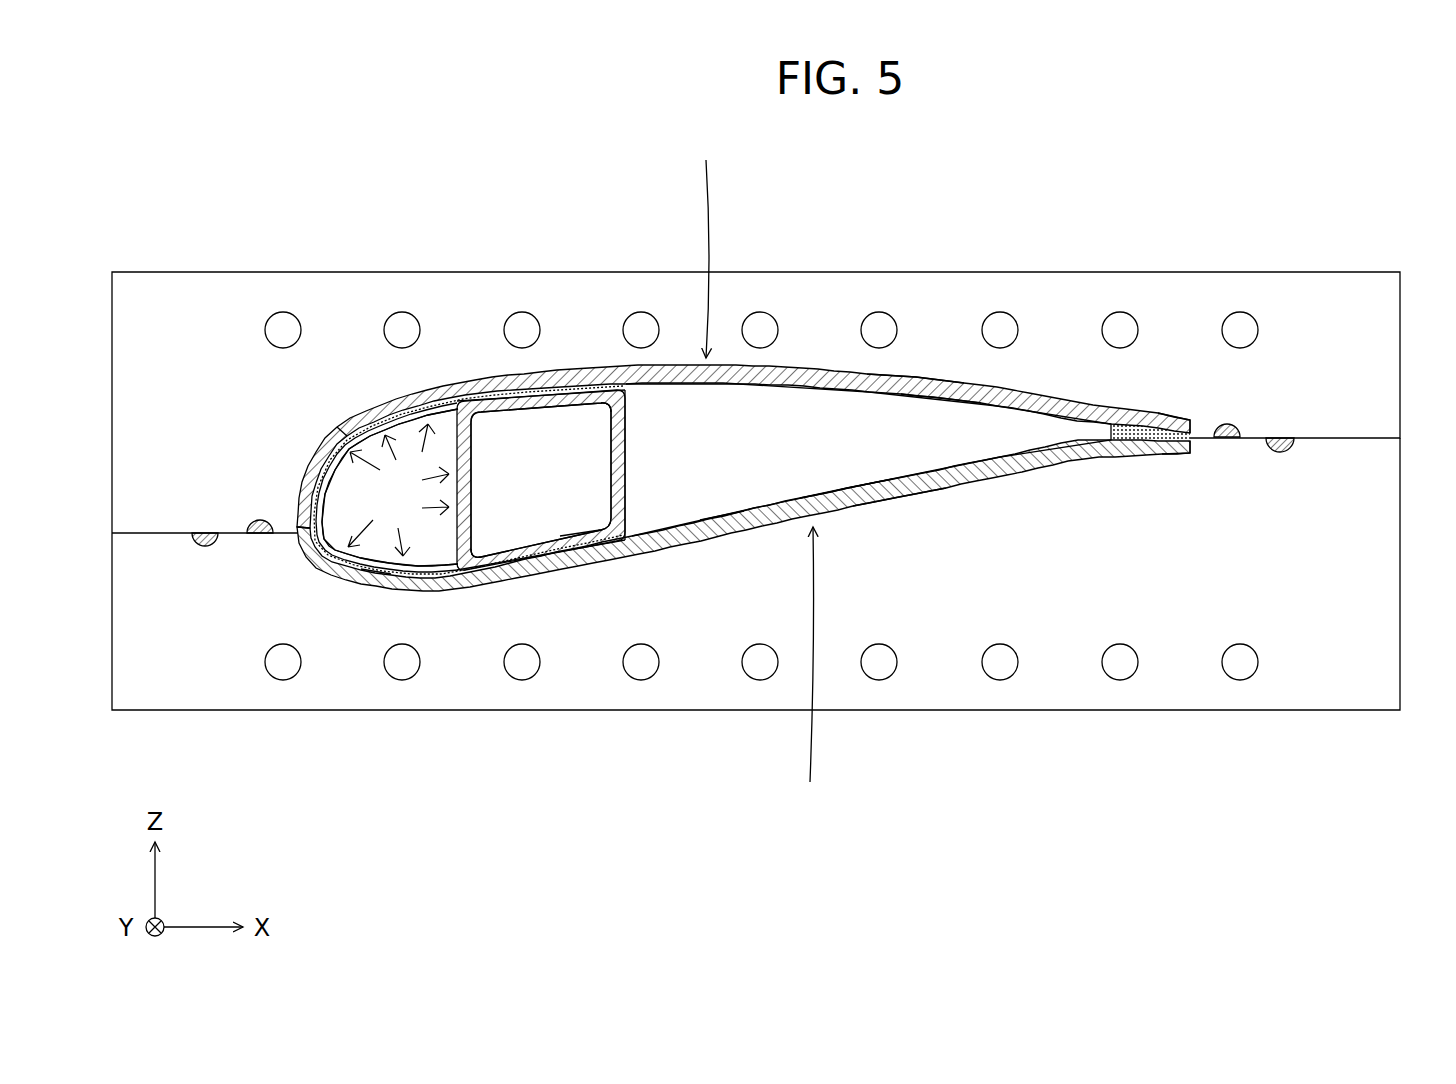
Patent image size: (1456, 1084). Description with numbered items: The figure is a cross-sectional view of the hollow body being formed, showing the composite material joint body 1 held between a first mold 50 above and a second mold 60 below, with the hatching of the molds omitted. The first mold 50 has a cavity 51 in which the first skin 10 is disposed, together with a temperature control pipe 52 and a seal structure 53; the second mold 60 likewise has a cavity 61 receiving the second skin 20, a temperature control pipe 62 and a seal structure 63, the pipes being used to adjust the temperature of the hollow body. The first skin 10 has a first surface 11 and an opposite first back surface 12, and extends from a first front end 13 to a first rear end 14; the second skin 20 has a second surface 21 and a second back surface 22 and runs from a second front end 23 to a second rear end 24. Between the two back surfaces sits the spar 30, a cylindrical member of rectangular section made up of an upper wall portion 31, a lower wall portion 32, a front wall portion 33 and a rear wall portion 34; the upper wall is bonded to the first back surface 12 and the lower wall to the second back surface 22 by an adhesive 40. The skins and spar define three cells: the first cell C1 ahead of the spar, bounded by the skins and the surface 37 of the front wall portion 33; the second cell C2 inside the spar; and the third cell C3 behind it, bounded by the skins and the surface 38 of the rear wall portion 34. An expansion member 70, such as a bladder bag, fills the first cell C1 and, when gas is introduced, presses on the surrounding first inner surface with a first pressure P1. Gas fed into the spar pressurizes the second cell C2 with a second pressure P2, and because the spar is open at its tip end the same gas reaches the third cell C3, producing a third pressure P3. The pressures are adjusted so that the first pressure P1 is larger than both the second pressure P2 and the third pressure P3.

The composite material joint body 1 is at (743, 455).
The first skin 10 is at (823, 370).
The first surface 11 is at (907, 378).
The first back surface 12 is at (938, 410).
The first front end 13 is at (302, 533).
The first rear end 14 is at (1190, 428).
The second skin 20 is at (935, 485).
The second surface 21 is at (837, 508).
The second back surface 22 is at (868, 482).
The second front end 23 is at (365, 420).
The second rear end 24 is at (1192, 453).
The spar 30 is at (562, 392).
The upper wall portion 31 is at (594, 385).
The lower wall portion 32 is at (518, 567).
The front wall portion 33 is at (483, 497).
The rear wall portion 34 is at (623, 537).
The surface of the front wall portion 37 is at (452, 545).
The surface of the rear wall portion 38 is at (627, 463).
The adhesive 40 is at (312, 478).
The first mold 50 is at (1302, 246).
The cavity 51 is at (717, 238).
The temperature control pipe 52 is at (1130, 312).
The seal structure 53 is at (1237, 428).
The second mold 60 is at (1342, 722).
The cavity 61 is at (812, 669).
The temperature control pipe 62 is at (1130, 680).
The seal structure 63 is at (1290, 455).
The expansion member 70 is at (372, 568).
The first cell C1 is at (388, 540).
The second cell C2 is at (573, 517).
The third cell C3 is at (726, 503).
The first pressure P1 is at (398, 490).
The second pressure P2 is at (541, 480).
The third pressure P3 is at (868, 460).